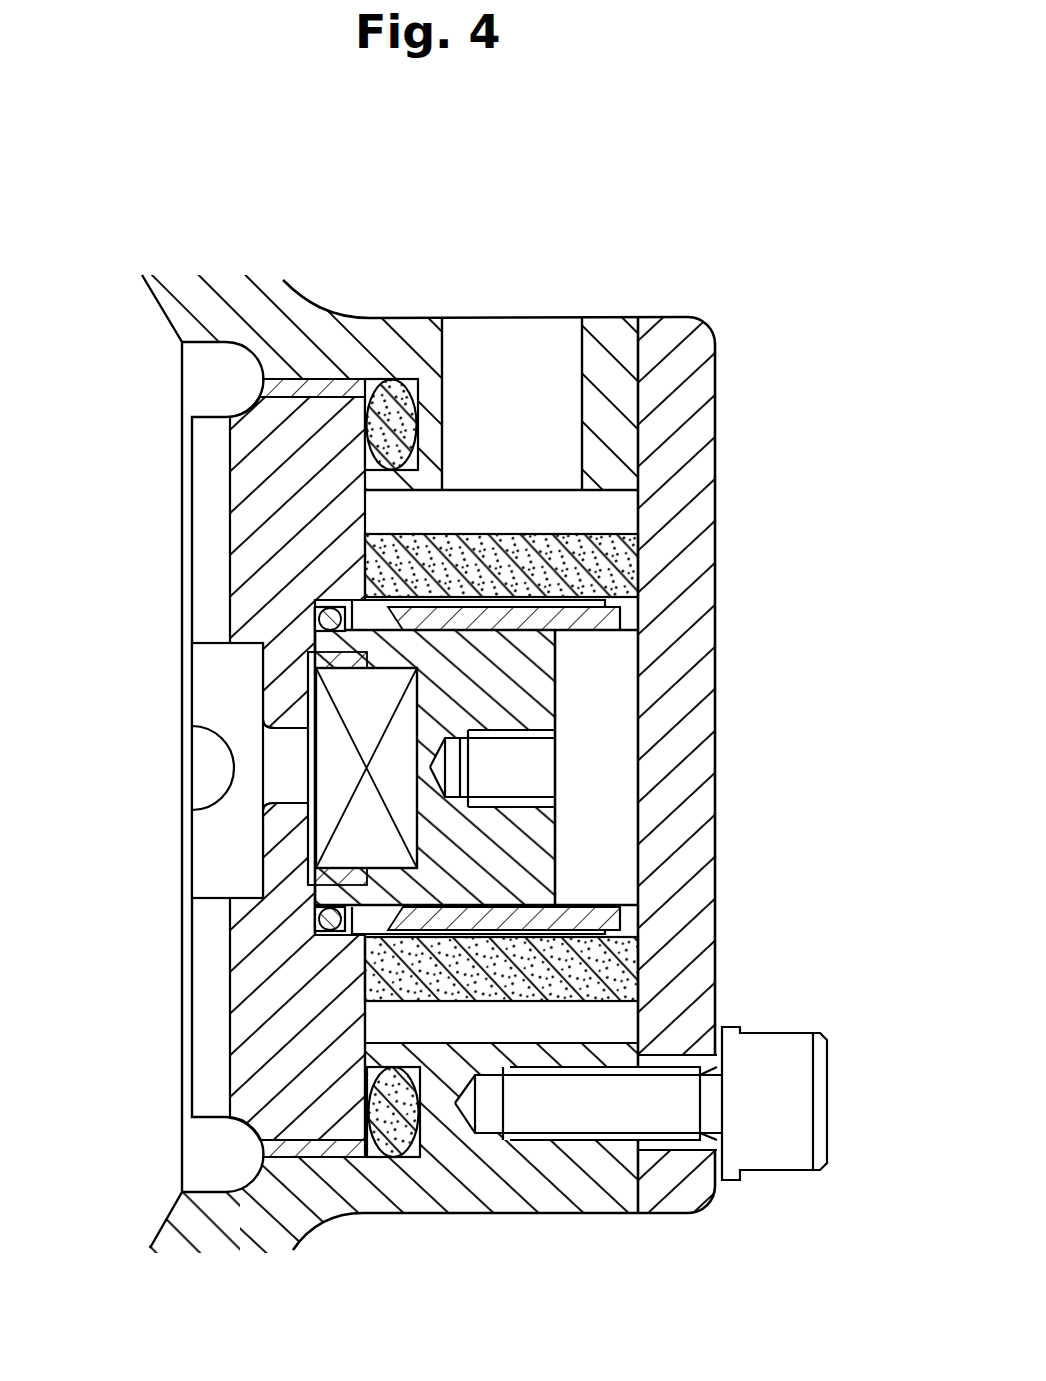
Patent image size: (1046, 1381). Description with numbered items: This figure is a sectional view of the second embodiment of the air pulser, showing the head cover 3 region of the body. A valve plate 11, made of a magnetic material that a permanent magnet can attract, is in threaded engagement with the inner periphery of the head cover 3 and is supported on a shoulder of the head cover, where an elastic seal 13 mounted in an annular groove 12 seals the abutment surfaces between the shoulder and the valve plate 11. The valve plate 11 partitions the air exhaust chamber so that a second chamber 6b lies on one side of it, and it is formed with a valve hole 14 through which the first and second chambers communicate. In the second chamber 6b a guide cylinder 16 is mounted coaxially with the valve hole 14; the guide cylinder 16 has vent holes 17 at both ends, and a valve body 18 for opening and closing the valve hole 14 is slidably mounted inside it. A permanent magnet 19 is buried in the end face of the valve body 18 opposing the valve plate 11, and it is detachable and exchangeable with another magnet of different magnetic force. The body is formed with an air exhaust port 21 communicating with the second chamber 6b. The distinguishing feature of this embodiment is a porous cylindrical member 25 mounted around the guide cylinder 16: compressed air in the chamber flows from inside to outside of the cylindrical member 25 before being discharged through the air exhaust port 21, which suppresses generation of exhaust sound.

The head cover 3 is at (296, 296).
The air exhaust port 21 is at (511, 362).
The porous cylindrical member 25 is at (527, 557).
The second chamber 6b is at (613, 517).
The vent holes 17 is at (625, 613).
The guide cylinder 16 is at (575, 620).
The valve body 18 is at (540, 827).
The permanent magnet 19 is at (337, 750).
The valve hole 14 is at (287, 785).
The valve plate 11 is at (253, 522).
The elastic seal 13 is at (390, 1133).
The annular groove 12 is at (460, 1213).